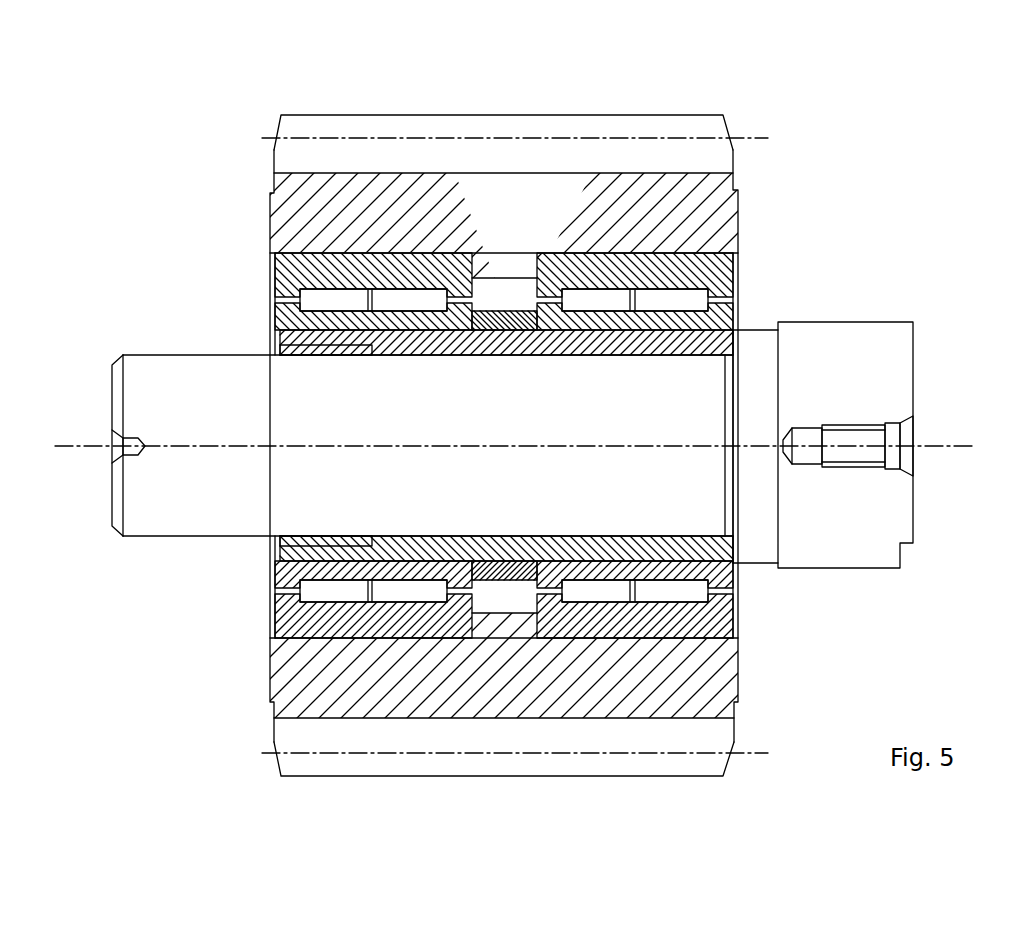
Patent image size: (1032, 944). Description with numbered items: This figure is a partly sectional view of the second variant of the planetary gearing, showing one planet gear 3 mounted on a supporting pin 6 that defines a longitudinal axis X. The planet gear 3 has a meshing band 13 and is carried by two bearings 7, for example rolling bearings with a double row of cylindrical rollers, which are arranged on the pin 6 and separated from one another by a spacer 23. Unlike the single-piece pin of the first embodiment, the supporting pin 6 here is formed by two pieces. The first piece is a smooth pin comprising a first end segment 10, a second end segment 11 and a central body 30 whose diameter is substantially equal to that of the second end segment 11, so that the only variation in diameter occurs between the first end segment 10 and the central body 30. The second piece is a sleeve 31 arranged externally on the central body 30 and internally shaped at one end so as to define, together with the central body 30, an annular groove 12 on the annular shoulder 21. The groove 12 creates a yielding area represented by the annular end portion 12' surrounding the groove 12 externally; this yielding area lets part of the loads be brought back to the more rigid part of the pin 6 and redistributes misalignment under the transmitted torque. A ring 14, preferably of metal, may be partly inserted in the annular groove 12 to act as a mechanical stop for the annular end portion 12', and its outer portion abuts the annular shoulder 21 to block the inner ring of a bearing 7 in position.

The planet gear 3 is at (802, 128).
The supporting pin 6 is at (888, 316).
The bearing 7 is at (335, 620).
The first end segment 10 is at (898, 375).
The second end segment 11 is at (160, 515).
The annular groove 12 is at (432, 384).
The annular end portion 12' is at (459, 446).
The meshing band 13 is at (625, 128).
The ring 14 is at (272, 345).
The annular shoulder 21 is at (287, 550).
The spacer 23 is at (527, 580).
The central body 30 is at (503, 441).
The sleeve 31 is at (695, 343).
The longitudinal axis X is at (935, 452).